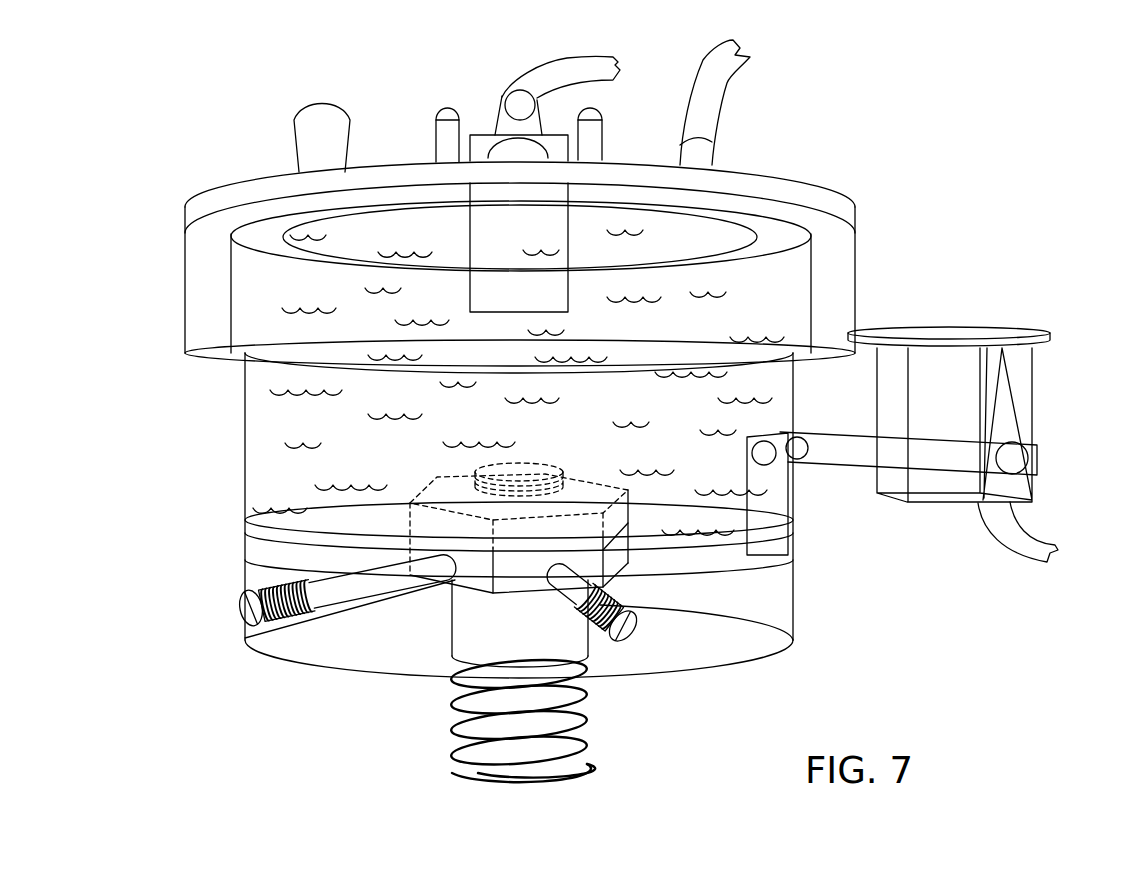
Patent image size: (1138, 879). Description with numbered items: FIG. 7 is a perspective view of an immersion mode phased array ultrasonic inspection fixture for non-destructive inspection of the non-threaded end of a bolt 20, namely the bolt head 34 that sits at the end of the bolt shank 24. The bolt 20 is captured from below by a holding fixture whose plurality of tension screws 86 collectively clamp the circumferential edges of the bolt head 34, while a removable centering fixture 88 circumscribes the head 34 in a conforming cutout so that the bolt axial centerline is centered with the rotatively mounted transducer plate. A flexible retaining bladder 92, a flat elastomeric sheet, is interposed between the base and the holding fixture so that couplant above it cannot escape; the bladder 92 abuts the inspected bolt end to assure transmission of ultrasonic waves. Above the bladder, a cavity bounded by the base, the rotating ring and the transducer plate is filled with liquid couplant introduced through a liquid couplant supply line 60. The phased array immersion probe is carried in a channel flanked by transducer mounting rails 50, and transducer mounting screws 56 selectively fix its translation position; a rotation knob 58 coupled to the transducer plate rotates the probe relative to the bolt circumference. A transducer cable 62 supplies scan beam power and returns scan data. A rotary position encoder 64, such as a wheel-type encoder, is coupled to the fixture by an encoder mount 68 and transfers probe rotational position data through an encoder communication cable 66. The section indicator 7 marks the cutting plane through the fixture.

The bolt 20 is at (615, 742).
The bolt shank 24 is at (577, 643).
The bolt head 34 is at (470, 572).
The transducer mounting rails 50 is at (440, 152).
The transducer mounting screws 56 is at (452, 112).
The rotation knob 58 is at (315, 148).
The liquid couplant supply line 60 is at (700, 92).
The transducer cable 62 is at (563, 75).
The rotary position encoder 64 is at (1052, 375).
The encoder communication cable 66 is at (1030, 535).
The encoder mount 68 is at (778, 497).
The tension screws 86 is at (305, 610).
The centering fixture 88 is at (797, 553).
The flexible retaining bladder 92 is at (240, 545).
The section line 7 is at (243, 558).